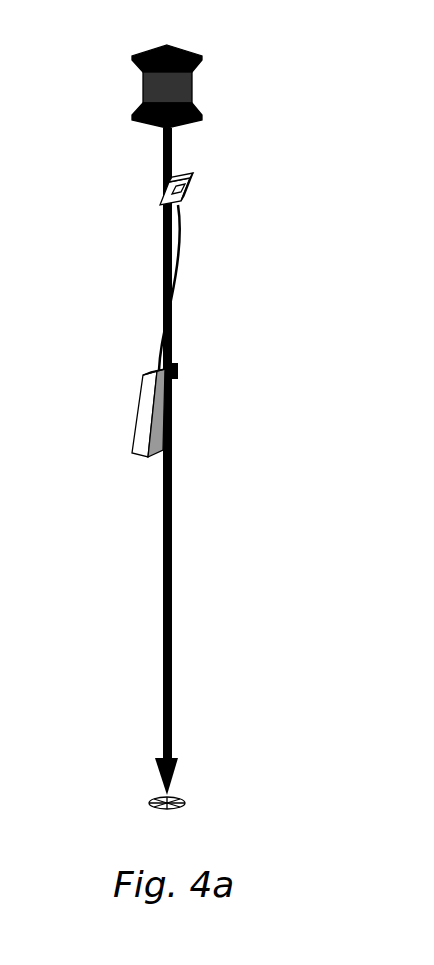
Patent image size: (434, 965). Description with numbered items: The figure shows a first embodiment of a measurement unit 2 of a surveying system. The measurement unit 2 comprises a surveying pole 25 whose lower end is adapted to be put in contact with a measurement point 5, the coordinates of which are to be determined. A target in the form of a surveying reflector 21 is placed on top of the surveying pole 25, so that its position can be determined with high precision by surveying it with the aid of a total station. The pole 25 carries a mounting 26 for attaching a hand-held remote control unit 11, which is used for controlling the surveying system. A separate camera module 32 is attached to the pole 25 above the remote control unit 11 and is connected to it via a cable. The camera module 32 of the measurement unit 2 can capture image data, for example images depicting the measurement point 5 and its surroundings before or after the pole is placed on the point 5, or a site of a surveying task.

The measurement unit 2 is at (275, 114).
The surveying reflector 21 is at (130, 78).
The camera module 32 is at (219, 271).
The hand-held remote control unit 11 is at (119, 410).
The mounting 26 is at (219, 431).
The surveying pole 25 is at (125, 461).
The measurement point 5 is at (212, 783).